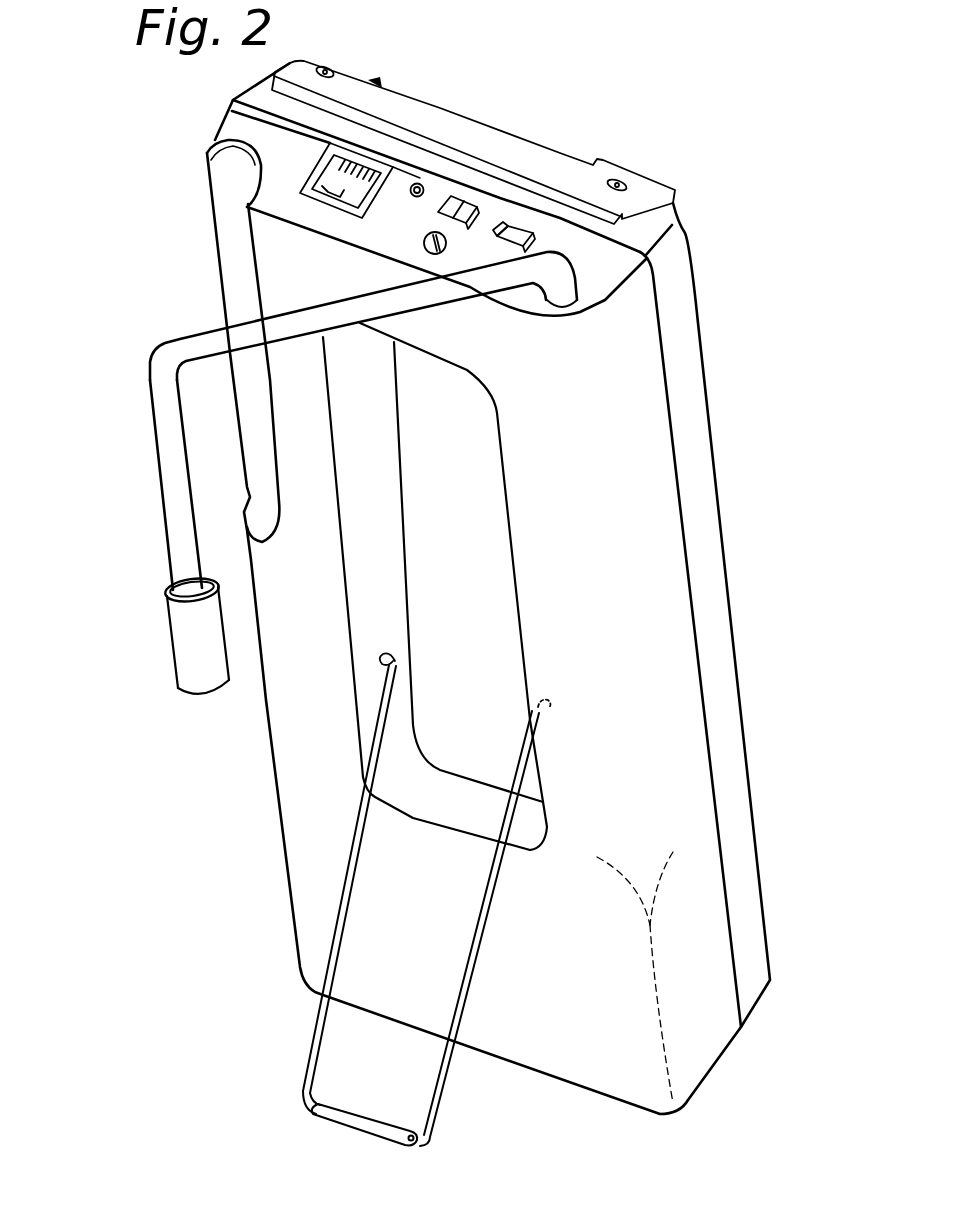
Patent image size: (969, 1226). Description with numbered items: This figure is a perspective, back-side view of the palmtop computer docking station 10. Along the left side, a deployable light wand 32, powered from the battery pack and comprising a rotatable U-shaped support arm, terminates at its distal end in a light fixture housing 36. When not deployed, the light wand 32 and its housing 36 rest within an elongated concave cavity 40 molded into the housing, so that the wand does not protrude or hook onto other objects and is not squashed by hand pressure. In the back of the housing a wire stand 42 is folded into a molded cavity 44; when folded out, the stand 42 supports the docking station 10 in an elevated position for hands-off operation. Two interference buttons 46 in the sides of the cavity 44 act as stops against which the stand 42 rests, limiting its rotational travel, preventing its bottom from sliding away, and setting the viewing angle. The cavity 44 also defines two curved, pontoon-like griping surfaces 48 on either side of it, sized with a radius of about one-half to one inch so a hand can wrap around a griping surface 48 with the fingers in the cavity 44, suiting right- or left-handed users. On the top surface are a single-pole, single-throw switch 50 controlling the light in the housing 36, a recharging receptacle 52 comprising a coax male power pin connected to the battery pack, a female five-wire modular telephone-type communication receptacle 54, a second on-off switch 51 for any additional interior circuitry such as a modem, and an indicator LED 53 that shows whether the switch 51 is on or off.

The docking station 10 is at (152, 190).
The light wand 32 is at (158, 420).
The light fixture housing 36 is at (195, 655).
The cavity 40 is at (225, 268).
The wire stand 42 is at (470, 982).
The cavity 44 is at (454, 528).
The interference buttons 46 is at (387, 650).
The griping surfaces 48 is at (300, 583).
The single-pole, single-throw switch 50 is at (518, 227).
The on-off switch 51 is at (468, 197).
The recharging receptacle 52 is at (423, 248).
The indicator LED 53 is at (422, 183).
The communication receptacle 54 is at (350, 153).